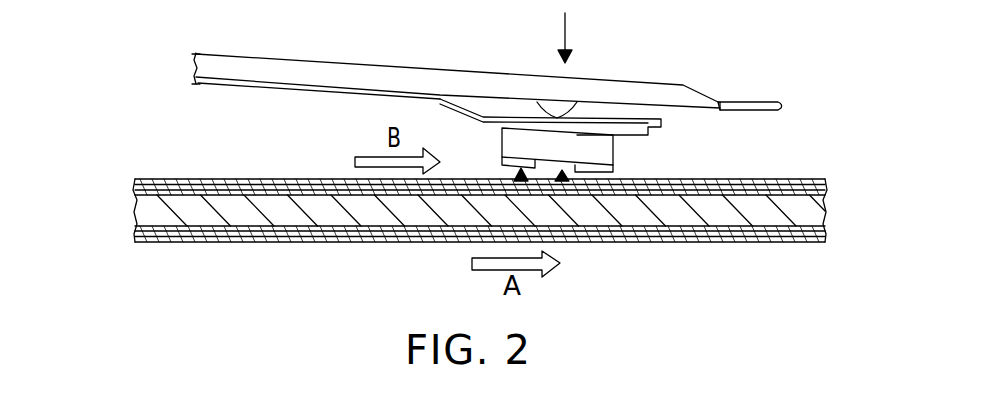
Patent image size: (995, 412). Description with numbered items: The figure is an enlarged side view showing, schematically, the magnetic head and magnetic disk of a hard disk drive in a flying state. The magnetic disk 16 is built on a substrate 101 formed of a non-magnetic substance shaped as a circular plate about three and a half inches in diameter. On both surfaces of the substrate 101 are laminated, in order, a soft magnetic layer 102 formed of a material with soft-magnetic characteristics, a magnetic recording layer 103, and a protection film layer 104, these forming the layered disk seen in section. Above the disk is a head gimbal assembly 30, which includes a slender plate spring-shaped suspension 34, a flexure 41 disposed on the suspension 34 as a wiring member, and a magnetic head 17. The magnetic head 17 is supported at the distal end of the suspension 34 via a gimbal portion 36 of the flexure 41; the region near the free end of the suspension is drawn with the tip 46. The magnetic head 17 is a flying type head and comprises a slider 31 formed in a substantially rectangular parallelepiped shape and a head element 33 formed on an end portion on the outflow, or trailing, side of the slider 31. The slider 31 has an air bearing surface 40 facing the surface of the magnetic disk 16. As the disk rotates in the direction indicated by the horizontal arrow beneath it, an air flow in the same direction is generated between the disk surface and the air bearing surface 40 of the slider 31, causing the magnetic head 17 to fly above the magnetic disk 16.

The head gimbal assembly 30 is at (408, 66).
The suspension 34 is at (295, 68).
The flexure 41 is at (277, 88).
The gimbal portion 36 is at (497, 101).
The slider 31 is at (575, 147).
The tip portion 46 is at (755, 102).
The head element 33 is at (605, 150).
The air bearing surface 40 is at (520, 177).
The magnetic head 17 is at (562, 177).
The magnetic disk 16 is at (180, 153).
The protection film layer 104 is at (152, 178).
The magnetic recording layer 103 is at (218, 178).
The soft magnetic layer 102 is at (137, 197).
The substrate 101 is at (242, 217).